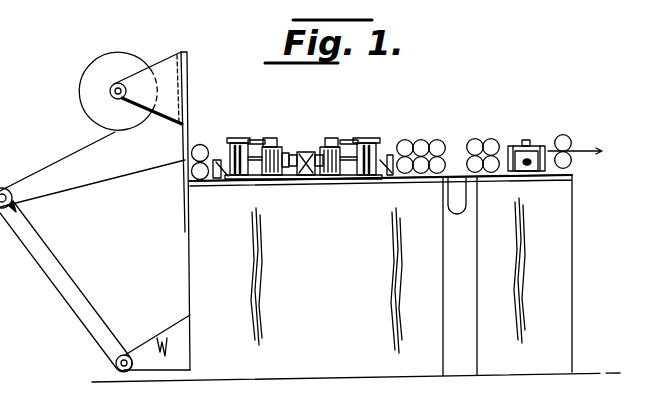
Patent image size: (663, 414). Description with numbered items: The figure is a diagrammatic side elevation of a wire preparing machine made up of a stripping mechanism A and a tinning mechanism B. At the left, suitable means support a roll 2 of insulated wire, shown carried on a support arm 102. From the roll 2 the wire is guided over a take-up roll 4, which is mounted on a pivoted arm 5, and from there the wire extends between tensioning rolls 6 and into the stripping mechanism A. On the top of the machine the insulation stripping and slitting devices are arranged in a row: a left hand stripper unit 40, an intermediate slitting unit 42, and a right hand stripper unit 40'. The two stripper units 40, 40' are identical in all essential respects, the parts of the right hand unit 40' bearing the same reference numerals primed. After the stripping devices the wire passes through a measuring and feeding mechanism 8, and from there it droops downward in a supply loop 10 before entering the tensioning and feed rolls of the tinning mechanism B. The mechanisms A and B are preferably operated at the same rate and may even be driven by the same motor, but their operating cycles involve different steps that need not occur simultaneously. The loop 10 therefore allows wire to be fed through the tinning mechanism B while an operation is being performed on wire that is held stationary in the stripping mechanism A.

The roll of insulated wire 2 is at (88, 86).
The reel support arm 102 is at (50, 162).
The take-up roll 4 is at (14, 197).
The pivoted arm 5 is at (65, 283).
The tensioning rolls 6 is at (204, 147).
The left hand stripper unit 40 is at (254, 131).
The intermediate slitting unit 42 is at (307, 142).
The right hand stripper unit 40' is at (356, 129).
The measuring and feeding mechanism 8 is at (421, 140).
The supply loop 10 is at (456, 216).
The stripping mechanism A is at (262, 367).
The tinning mechanism B is at (557, 280).